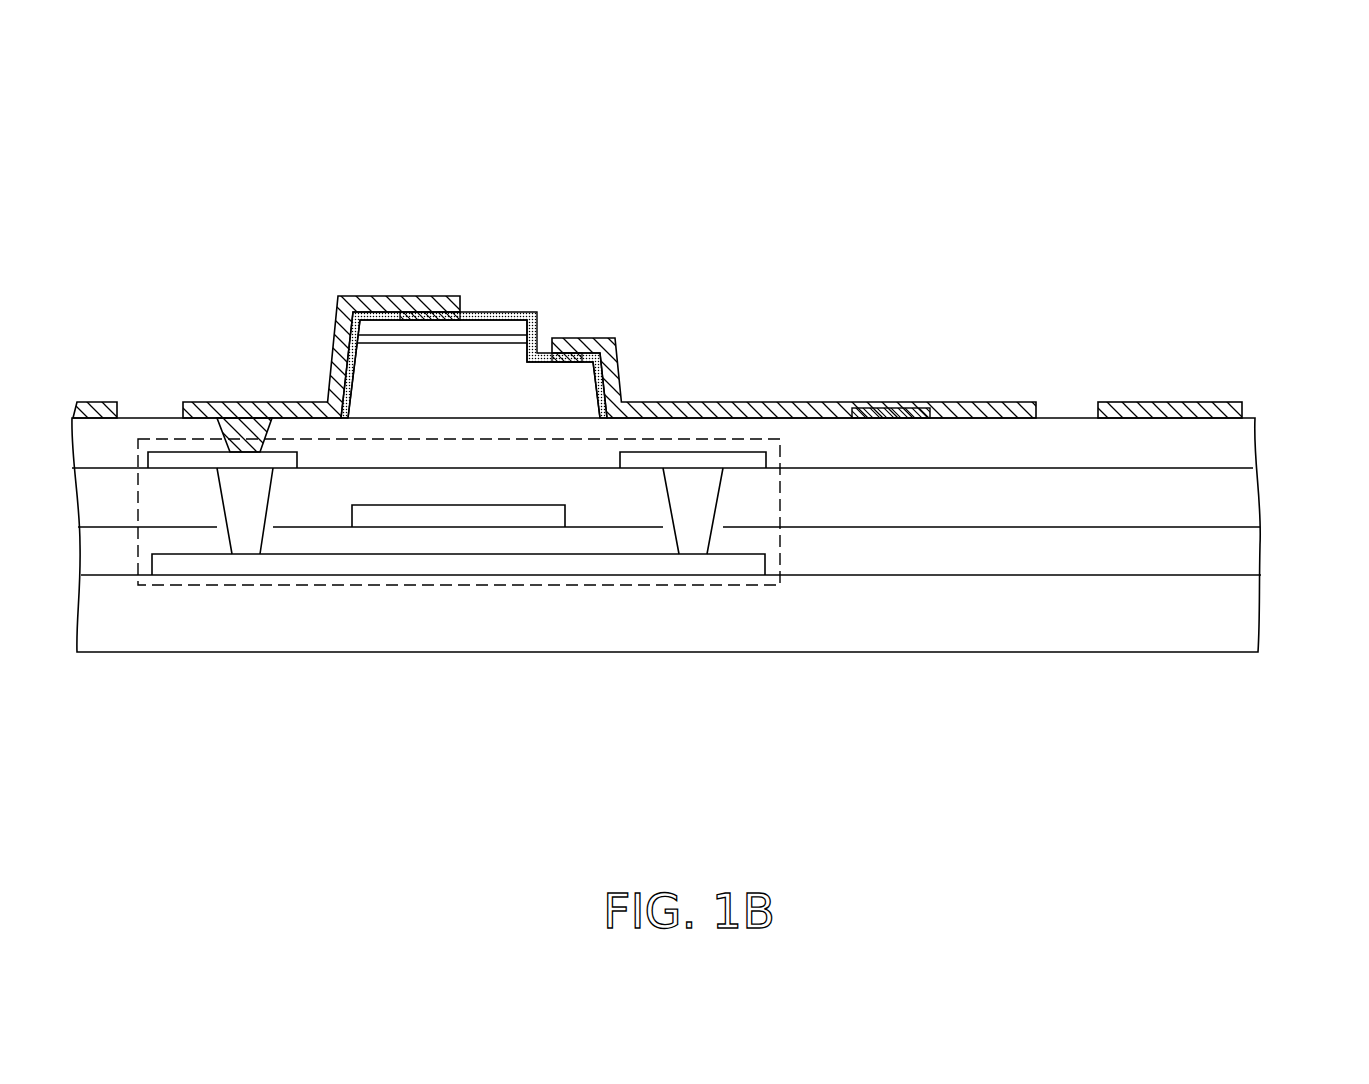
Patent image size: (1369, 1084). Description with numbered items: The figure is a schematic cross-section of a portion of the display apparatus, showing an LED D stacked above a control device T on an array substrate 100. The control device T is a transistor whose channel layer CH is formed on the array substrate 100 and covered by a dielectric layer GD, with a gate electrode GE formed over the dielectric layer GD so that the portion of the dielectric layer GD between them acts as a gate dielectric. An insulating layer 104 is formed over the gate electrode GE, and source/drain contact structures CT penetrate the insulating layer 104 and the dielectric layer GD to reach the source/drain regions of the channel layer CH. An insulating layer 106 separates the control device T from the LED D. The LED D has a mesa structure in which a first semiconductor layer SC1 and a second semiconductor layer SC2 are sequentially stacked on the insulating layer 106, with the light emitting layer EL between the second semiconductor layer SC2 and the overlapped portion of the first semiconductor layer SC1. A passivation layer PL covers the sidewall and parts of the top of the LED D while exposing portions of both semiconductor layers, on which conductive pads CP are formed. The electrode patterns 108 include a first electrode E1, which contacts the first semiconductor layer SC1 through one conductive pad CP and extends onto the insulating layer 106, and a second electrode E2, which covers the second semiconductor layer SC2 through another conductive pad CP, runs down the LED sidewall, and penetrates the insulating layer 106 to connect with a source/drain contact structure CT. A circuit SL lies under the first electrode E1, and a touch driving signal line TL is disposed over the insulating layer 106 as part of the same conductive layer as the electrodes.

The array substrate 100 is at (1237, 636).
The insulating layer 106 is at (1243, 450).
The insulating layer 104 is at (1243, 492).
The dielectric layer GD is at (1243, 550).
The channel layer CH is at (378, 560).
The gate electrode GE is at (467, 517).
The source/drain contact structures CT is at (245, 532).
The control device T is at (752, 585).
The touch driving signal line TL is at (98, 407).
The second electrode E2 is at (283, 405).
The first electrode E1 is at (823, 402).
The passivation layer PL is at (538, 322).
The circuit SL is at (897, 408).
The conductive pad CP is at (433, 297).
The first semiconductor layer SC1 is at (580, 388).
The light emitting layer EL is at (483, 338).
The second semiconductor layer SC2 is at (518, 328).
The LED D is at (90, 73).
The electrode patterns 108 is at (240, 77).